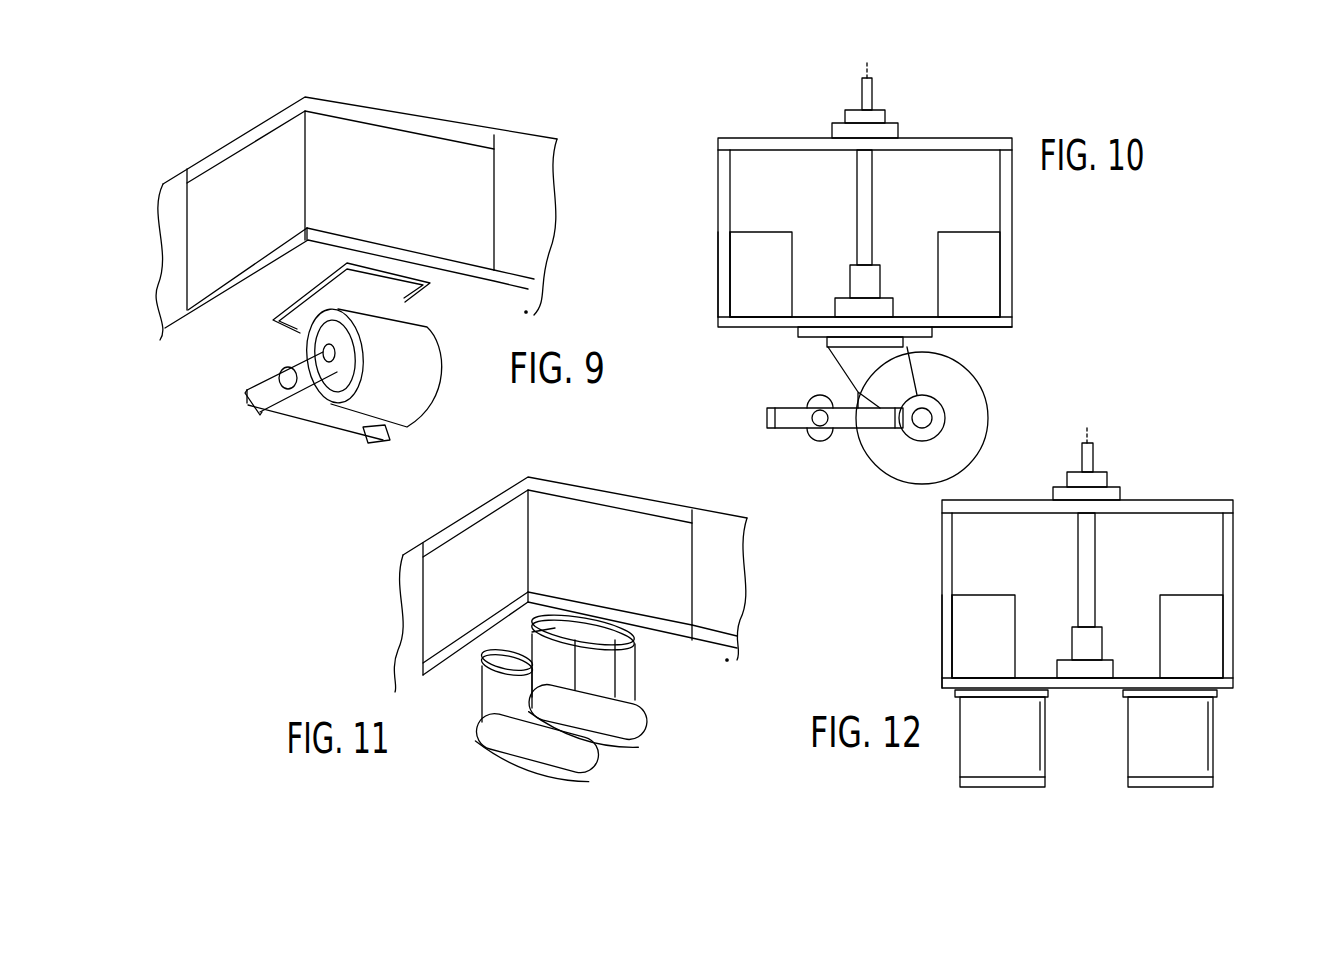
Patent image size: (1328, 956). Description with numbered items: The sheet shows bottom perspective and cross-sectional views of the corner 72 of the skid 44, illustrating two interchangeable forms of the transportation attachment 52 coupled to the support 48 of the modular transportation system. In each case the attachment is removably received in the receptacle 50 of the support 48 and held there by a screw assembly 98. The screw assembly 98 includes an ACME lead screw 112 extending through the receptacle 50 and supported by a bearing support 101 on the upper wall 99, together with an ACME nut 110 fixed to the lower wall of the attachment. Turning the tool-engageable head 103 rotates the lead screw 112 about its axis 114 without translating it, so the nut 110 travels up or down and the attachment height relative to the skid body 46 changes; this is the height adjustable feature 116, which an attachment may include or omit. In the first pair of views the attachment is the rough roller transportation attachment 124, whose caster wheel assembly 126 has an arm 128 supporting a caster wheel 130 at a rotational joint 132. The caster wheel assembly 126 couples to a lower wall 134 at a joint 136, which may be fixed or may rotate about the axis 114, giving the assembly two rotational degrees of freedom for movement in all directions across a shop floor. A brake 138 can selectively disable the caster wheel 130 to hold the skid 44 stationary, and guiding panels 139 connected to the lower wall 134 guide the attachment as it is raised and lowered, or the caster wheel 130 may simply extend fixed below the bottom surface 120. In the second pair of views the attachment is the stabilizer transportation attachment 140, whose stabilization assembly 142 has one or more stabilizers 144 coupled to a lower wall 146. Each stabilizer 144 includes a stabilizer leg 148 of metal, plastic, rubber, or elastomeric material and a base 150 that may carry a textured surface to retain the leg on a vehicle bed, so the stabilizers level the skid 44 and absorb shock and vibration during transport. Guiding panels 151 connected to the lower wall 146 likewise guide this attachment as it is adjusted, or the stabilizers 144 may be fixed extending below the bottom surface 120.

In FIG. 9, the skid 44 is at (592, 151).
In FIG. 10, the skid 44 is at (695, 165).
In FIG. 11, the skid 44 is at (363, 617).
In FIG. 12, the skid 44 is at (917, 550).
In FIG. 9, the skid body 46 is at (534, 148).
In FIG. 11, the skid body 46 is at (727, 522).
In FIG. 9, the support 48 is at (205, 197).
In FIG. 10, the support 48 is at (745, 253).
In FIG. 11, the support 48 is at (440, 610).
In FIG. 12, the support 48 is at (950, 627).
In FIG. 9, the receptacle 50 is at (187, 277).
In FIG. 10, the receptacle 50 is at (728, 278).
In FIG. 11, the receptacle 50 is at (420, 660).
In FIG. 12, the receptacle 50 is at (950, 640).
In FIG. 9, the transportation attachment 52 is at (240, 376).
In FIG. 10, the transportation attachment 52 is at (772, 395).
In FIG. 11, the transportation attachment 52 is at (497, 760).
In FIG. 12, the transportation attachment 52 is at (1023, 795).
In FIG. 9, the corner 72 is at (378, 139).
In FIG. 10, the corner 72 is at (718, 233).
In FIG. 11, the corner 72 is at (633, 515).
In FIG. 12, the corner 72 is at (940, 617).
In FIG. 10, the screw assembly 98 is at (815, 245).
In FIG. 12, the screw assembly 98 is at (1032, 600).
In FIG. 9, the upper wall 99 is at (233, 141).
In FIG. 10, the upper wall 99 is at (938, 137).
In FIG. 11, the upper wall 99 is at (505, 488).
In FIG. 12, the upper wall 99 is at (1160, 500).
In FIG. 10, the bearing support 101 is at (902, 128).
In FIG. 12, the bearing support 101 is at (1117, 488).
In FIG. 10, the tool-engageable head 103 is at (860, 85).
In FIG. 12, the tool-engageable head 103 is at (1085, 460).
In FIG. 10, the ACME nut 110 is at (867, 282).
In FIG. 12, the ACME nut 110 is at (1090, 645).
In FIG. 10, the ACME lead screw 112 is at (867, 247).
In FIG. 12, the ACME lead screw 112 is at (1088, 607).
In FIG. 10, the axis 114 is at (870, 67).
In FIG. 12, the axis 114 is at (1092, 430).
In FIG. 10, the height adjustable feature 116 is at (890, 265).
In FIG. 12, the height adjustable feature 116 is at (1113, 627).
In FIG. 9, the bottom surface 120 is at (187, 330).
In FIG. 10, the bottom surface 120 is at (1012, 320).
In FIG. 11, the bottom surface 120 is at (427, 707).
In FIG. 12, the bottom surface 120 is at (1233, 685).
In FIG. 9, the rough roller transportation attachment 124 is at (240, 376).
In FIG. 10, the rough roller transportation attachment 124 is at (772, 395).
In FIG. 9, the caster wheel assembly 126 is at (334, 428).
In FIG. 10, the caster wheel assembly 126 is at (1060, 370).
In FIG. 10, the arm 128 is at (850, 377).
In FIG. 9, the caster wheel 130 is at (408, 414).
In FIG. 10, the caster wheel 130 is at (980, 408).
In FIG. 10, the rotational joint 132 is at (940, 403).
In FIG. 9, the lower wall 134 is at (461, 291).
In FIG. 10, the lower wall 134 is at (987, 330).
In FIG. 10, the joint 136 is at (815, 337).
In FIG. 10, the brake 138 is at (822, 433).
In FIG. 10, the guiding panels 139 is at (752, 303).
In FIG. 11, the stabilizer transportation attachment 140 is at (497, 760).
In FIG. 12, the stabilizer transportation attachment 140 is at (1023, 795).
In FIG. 11, the stabilization assembly 142 is at (607, 773).
In FIG. 12, the stabilization assembly 142 is at (1145, 793).
In FIG. 11, the stabilizer 144 is at (580, 752).
In FIG. 12, the stabilizer 144 is at (953, 747).
In FIG. 11, the lower wall 146 is at (662, 647).
In FIG. 12, the lower wall 146 is at (1222, 693).
In FIG. 11, the stabilizer leg 148 is at (490, 705).
In FIG. 12, the stabilizer leg 148 is at (1047, 712).
In FIG. 11, the base 150 is at (532, 748).
In FIG. 12, the base 150 is at (1045, 777).
In FIG. 12, the guiding panels 151 is at (963, 668).